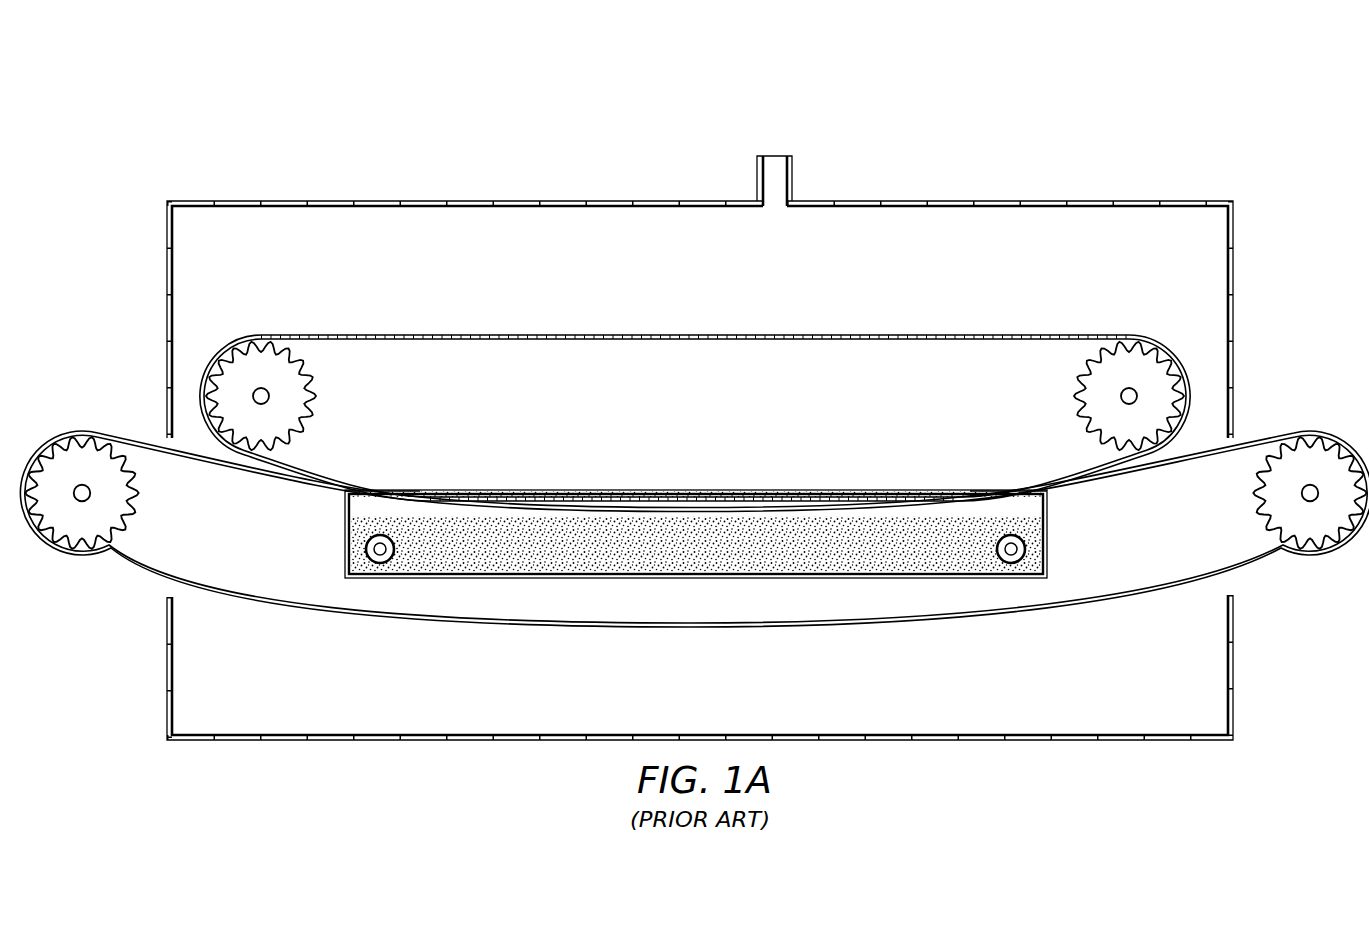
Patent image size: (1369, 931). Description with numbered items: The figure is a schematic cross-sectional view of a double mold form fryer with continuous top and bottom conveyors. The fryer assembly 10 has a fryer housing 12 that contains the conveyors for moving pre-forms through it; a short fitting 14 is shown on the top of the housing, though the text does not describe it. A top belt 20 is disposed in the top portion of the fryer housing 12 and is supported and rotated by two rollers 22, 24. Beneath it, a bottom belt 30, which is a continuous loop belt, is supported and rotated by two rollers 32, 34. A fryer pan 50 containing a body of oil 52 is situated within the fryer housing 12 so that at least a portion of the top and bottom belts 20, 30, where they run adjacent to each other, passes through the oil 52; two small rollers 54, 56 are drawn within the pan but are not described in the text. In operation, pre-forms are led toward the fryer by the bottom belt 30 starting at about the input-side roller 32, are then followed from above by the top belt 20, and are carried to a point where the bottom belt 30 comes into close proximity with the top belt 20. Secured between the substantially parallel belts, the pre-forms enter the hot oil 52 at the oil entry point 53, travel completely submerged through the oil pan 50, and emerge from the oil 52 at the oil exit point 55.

The fryer assembly 10 is at (258, 128).
The fryer housing 12 is at (167, 256).
The inlet port 14 is at (775, 158).
The top belt 20 is at (1000, 333).
The roller 22 is at (313, 399).
The roller 24 is at (1082, 399).
The bottom belt 30 is at (700, 629).
The input-side roller 32 is at (128, 507).
The roller 34 is at (1262, 504).
The fryer pan 50 is at (724, 582).
The oil 52 is at (690, 566).
The oil entry point 53 is at (345, 497).
The platen support roller 54 is at (366, 549).
The oil exit point 55 is at (1048, 496).
The platen support roller 56 is at (1026, 549).